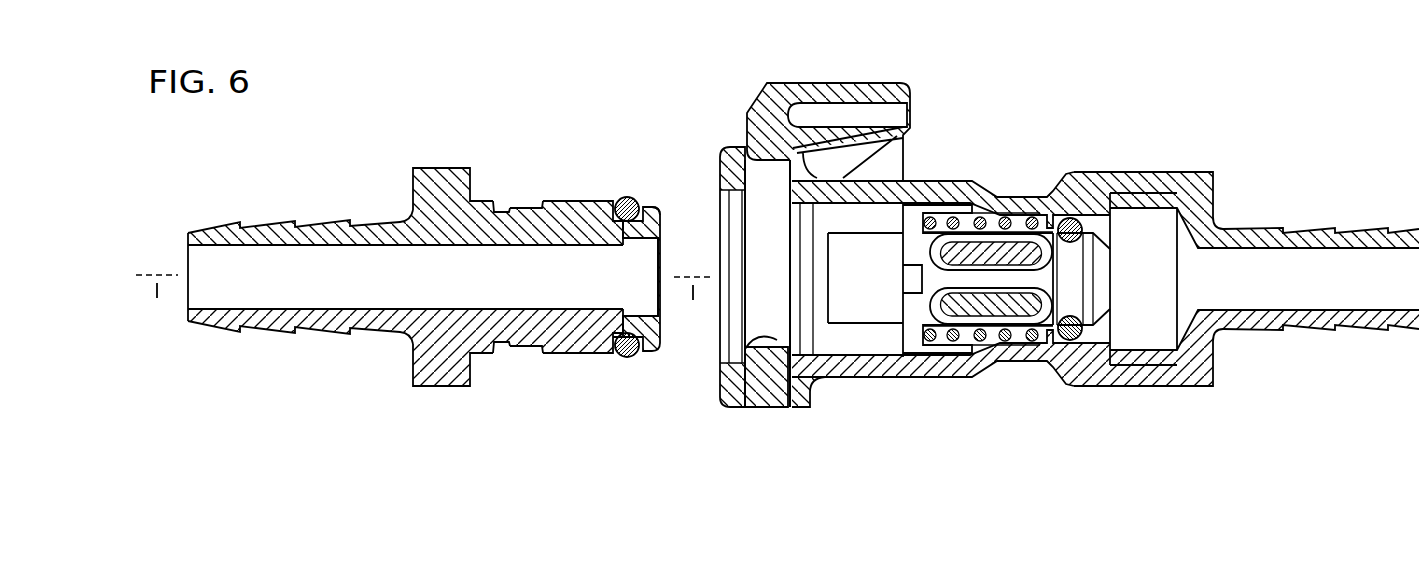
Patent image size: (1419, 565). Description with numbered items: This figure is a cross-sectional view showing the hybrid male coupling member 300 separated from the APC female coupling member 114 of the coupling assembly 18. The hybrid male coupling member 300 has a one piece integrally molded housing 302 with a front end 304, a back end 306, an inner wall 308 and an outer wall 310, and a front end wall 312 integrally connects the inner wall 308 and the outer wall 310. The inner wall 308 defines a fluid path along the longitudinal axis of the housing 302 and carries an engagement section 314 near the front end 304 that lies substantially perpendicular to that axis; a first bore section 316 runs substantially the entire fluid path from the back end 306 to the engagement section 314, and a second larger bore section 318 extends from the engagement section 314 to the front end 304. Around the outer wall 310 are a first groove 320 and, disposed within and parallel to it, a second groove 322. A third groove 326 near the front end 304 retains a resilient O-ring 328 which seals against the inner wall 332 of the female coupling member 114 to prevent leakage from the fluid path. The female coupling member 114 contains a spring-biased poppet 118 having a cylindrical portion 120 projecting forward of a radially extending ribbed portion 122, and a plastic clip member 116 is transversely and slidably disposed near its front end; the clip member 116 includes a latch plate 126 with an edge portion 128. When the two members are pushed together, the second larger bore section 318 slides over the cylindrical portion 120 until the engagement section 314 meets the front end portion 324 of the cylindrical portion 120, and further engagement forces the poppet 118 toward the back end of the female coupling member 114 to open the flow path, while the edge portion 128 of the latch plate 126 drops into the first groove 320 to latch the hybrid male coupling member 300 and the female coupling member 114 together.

The coupling assembly 18 is at (1042, 223).
The female coupling member 114 is at (1118, 168).
The clip member 116 is at (763, 78).
The spring-biased poppet 118 is at (1047, 337).
The cylindrical portion 120 is at (872, 323).
The ribbed portion 122 is at (915, 218).
The latch plate 126 is at (767, 113).
The edge portion 128 is at (753, 333).
The hybrid male coupling member 300 is at (435, 140).
The housing 302 is at (377, 227).
The front end 304 is at (660, 237).
The back end 306 is at (188, 255).
The inner wall 308 is at (540, 246).
The outer wall 310 is at (568, 200).
The front end wall 312 is at (657, 210).
The engagement section 314 is at (625, 238).
The first bore section 316 is at (408, 293).
The second larger bore section 318 is at (648, 290).
The first groove 320 is at (523, 208).
The second groove 322 is at (499, 210).
The front end portion 324 is at (827, 285).
The third groove 326 is at (613, 197).
The resilient O-ring 328 is at (620, 347).
The inner wall 332 is at (842, 204).